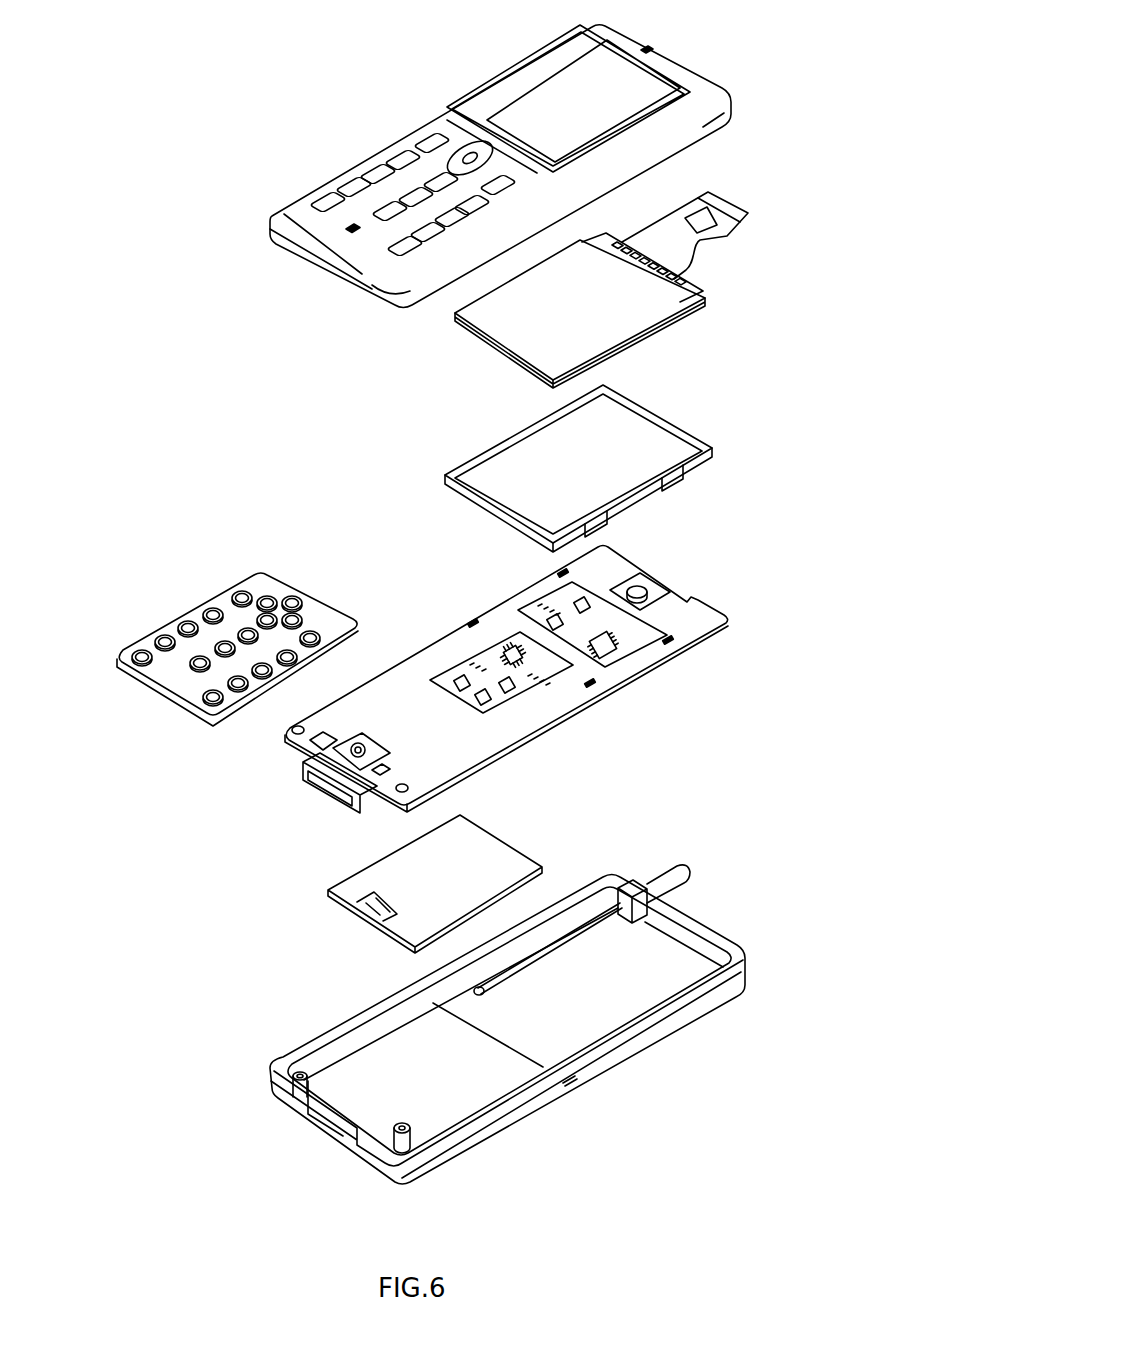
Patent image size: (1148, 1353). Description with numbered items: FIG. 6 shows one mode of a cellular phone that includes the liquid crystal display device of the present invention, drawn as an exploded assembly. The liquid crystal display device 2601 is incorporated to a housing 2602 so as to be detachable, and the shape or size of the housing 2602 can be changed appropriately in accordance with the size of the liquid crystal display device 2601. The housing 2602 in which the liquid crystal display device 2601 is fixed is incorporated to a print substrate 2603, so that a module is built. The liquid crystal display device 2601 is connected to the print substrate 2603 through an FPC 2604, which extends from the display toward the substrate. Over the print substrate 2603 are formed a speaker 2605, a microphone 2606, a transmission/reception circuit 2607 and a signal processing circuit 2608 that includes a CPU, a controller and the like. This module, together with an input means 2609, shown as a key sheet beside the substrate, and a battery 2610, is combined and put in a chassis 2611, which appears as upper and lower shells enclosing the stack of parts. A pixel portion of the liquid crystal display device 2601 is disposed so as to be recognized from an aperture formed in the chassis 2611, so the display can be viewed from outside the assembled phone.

The liquid crystal display device 2601 is at (670, 320).
The housing 2602 is at (700, 462).
The print substrate 2603 is at (537, 730).
The FPC 2604 is at (725, 232).
The speaker 2605 is at (650, 583).
The microphone 2606 is at (307, 783).
The transmission/reception circuit 2607 is at (635, 658).
The signal processing circuit 2608 is at (483, 655).
The input means 2609 is at (215, 597).
The battery 2610 is at (373, 927).
The chassis 2611 is at (698, 125).